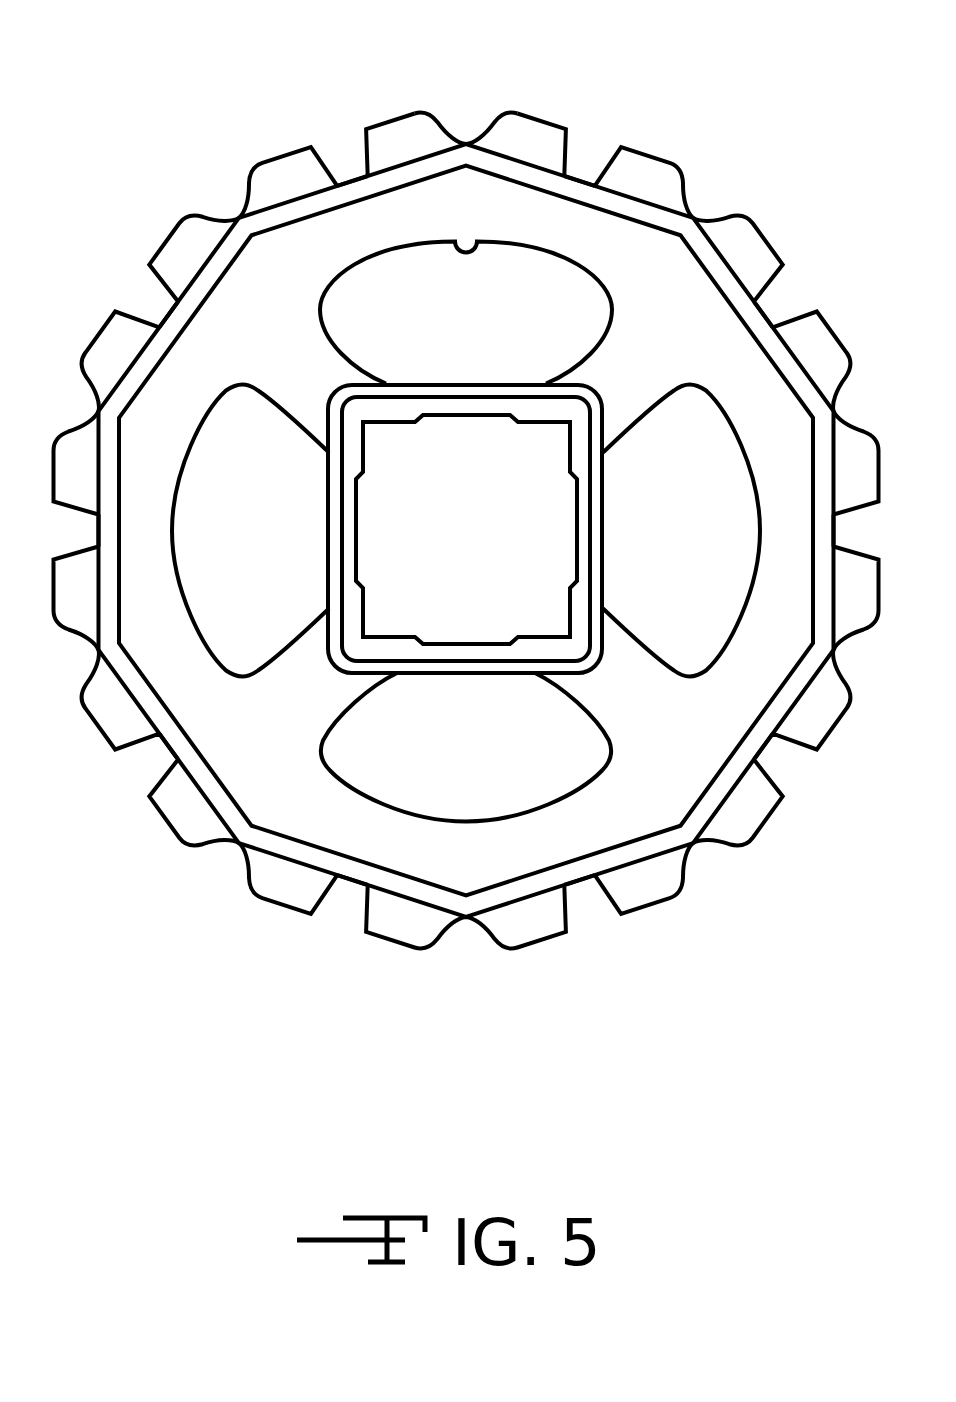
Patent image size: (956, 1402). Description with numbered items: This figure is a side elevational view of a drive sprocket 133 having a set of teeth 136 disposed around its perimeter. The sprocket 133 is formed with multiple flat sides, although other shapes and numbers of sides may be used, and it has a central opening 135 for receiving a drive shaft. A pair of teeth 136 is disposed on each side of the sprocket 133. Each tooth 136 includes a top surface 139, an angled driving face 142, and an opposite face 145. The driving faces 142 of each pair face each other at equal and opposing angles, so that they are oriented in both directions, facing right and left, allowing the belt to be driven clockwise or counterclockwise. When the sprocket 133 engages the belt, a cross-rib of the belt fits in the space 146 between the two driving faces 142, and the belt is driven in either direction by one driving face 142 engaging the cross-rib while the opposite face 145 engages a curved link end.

The drive sprocket 133 is at (646, 297).
The opening 135 is at (569, 536).
The teeth 136 is at (395, 143).
The top surface 139 is at (528, 118).
The angled driving face 142 is at (363, 152).
The opposite face 145 is at (441, 130).
The space 146 is at (150, 292).